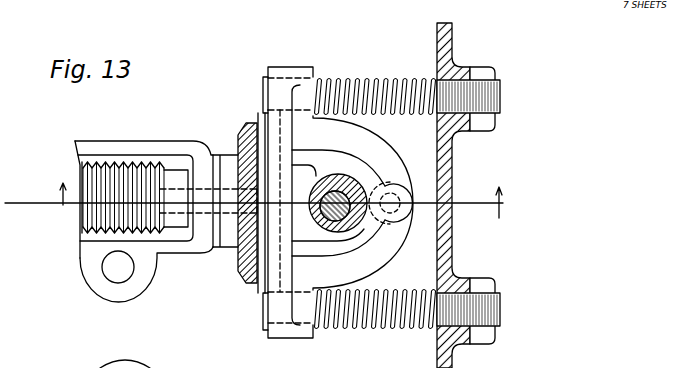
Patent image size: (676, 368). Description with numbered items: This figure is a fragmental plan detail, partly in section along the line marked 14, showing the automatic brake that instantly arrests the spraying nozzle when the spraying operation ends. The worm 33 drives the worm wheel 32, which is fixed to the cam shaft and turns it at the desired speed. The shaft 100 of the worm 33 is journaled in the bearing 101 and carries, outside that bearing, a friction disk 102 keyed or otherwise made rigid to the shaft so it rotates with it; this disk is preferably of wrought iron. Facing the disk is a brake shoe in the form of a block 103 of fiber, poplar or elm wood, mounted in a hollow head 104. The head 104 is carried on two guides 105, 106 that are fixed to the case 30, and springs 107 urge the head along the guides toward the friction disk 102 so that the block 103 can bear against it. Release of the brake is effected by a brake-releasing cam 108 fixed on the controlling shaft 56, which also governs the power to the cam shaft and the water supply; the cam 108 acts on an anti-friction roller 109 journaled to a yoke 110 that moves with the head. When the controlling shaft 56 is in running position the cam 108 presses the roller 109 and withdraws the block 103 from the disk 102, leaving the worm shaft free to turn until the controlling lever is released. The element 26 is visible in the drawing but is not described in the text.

The section line X14 14 is at (275, 200).
The mounting lobe with hole 26 is at (103, 288).
The case 30 is at (453, 160).
The worm wheel 32 is at (183, 367).
The worm 33 is at (78, 218).
The controlling shaft 56 is at (348, 230).
The shaft of the worm 100 is at (178, 207).
The bearing 101 is at (197, 254).
The friction disk 102 is at (239, 129).
The brake shoe block 103 is at (262, 293).
The hollow head 104 is at (277, 67).
The guide 105 is at (263, 95).
The guide 106 is at (263, 325).
The springs 107 is at (355, 76).
The brake-releasing cam 108 is at (345, 170).
The anti-friction roller 109 is at (355, 232).
The yoke 110 is at (395, 230).